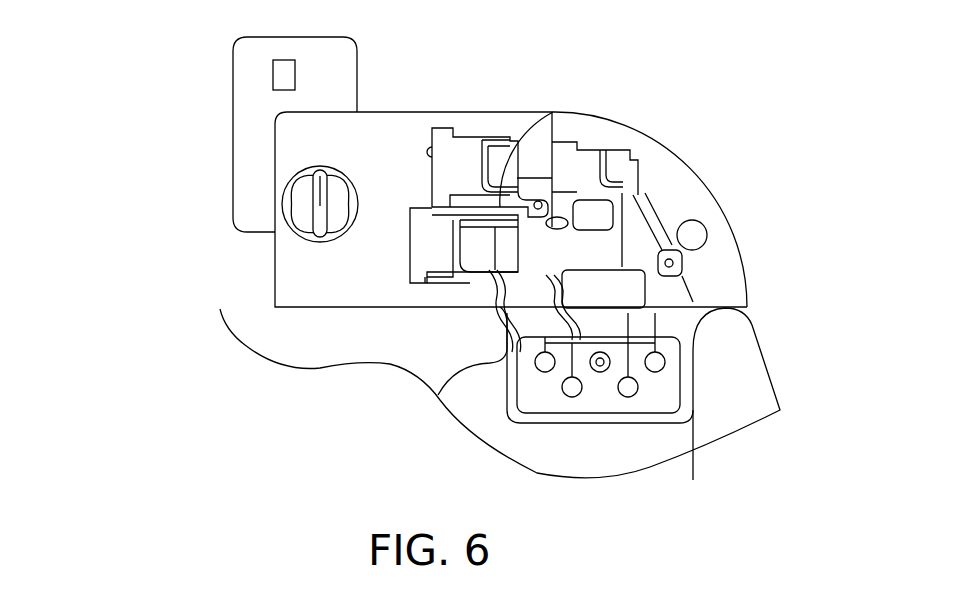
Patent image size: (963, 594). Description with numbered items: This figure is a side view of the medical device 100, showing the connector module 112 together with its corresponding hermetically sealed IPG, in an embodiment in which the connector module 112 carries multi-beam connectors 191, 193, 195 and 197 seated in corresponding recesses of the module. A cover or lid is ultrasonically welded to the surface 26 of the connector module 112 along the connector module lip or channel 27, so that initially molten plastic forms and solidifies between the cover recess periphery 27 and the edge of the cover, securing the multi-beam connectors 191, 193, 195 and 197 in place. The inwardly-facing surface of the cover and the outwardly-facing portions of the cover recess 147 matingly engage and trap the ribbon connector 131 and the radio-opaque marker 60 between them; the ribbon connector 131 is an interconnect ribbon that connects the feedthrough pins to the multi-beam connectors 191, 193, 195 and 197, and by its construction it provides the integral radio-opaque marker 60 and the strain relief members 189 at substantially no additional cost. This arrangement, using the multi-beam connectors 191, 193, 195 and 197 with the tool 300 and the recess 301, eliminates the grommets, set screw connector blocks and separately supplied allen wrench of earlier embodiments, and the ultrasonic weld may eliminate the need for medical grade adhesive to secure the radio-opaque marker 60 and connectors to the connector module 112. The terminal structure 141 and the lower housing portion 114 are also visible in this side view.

The medical device 100 is at (156, 166).
The tool 300 is at (250, 70).
The recess 301 is at (354, 173).
The surface 26 is at (421, 127).
The lip or channel 27 is at (432, 163).
The multi-beam connector 191 is at (462, 153).
The ribbon connector 131 is at (497, 158).
The multi-beam connector 193 is at (583, 163).
The radio-opaque marker 60 is at (623, 272).
The connector module 112 is at (755, 207).
The multi-beam connector 195 is at (420, 238).
The cover recess 147 is at (433, 267).
The multi-beam connector 197 is at (557, 253).
The strain relief members 189 is at (748, 307).
The connector terminals 141 is at (667, 371).
The lower housing section 114 is at (805, 418).